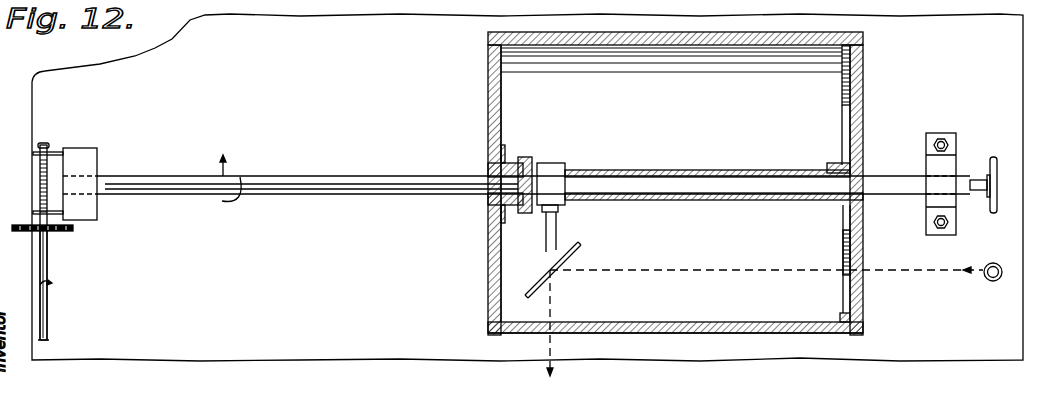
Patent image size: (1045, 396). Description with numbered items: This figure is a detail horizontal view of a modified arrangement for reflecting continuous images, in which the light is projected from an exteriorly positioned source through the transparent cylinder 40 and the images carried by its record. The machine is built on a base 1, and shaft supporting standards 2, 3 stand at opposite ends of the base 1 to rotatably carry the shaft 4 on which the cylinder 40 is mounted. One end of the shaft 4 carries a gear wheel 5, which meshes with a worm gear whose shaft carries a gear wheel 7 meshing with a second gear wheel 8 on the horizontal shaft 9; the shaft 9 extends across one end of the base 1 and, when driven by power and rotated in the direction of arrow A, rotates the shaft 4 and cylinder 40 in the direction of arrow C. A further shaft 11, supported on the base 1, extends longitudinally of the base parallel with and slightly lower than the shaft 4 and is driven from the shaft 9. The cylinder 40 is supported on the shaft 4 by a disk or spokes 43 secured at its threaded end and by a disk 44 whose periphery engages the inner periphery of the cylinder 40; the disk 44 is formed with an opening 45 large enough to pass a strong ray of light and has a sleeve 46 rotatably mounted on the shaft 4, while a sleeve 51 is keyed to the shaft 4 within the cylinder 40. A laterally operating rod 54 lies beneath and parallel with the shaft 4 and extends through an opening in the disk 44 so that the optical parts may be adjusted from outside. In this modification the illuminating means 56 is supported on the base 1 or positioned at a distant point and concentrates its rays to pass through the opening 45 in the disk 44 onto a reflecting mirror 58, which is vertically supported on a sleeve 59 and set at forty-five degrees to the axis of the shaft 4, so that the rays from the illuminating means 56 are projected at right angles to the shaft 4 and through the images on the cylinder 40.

The base 1 is at (310, 314).
The shaft supporting standard 2 is at (946, 171).
The shaft supporting standard 3 is at (89, 166).
The shaft 4 is at (324, 177).
The gear wheel 5 is at (40, 185).
The gear wheel 7 is at (47, 231).
The gear wheel 8 is at (73, 229).
The horizontal shaft 9 is at (47, 328).
The shaft 11 is at (488, 33).
The transparent cylinder 40 is at (667, 327).
The disk or spokes 43 is at (490, 102).
The disk 44 is at (842, 123).
The opening 45 is at (850, 249).
The sleeve 46 is at (835, 165).
The sleeve 51 is at (637, 172).
The operating rod 54 is at (988, 196).
The illuminating means 56 is at (988, 283).
The reflecting mirror 58 is at (580, 247).
The sleeve 59 is at (549, 176).
The arrow A is at (54, 290).
The arrow C is at (228, 197).